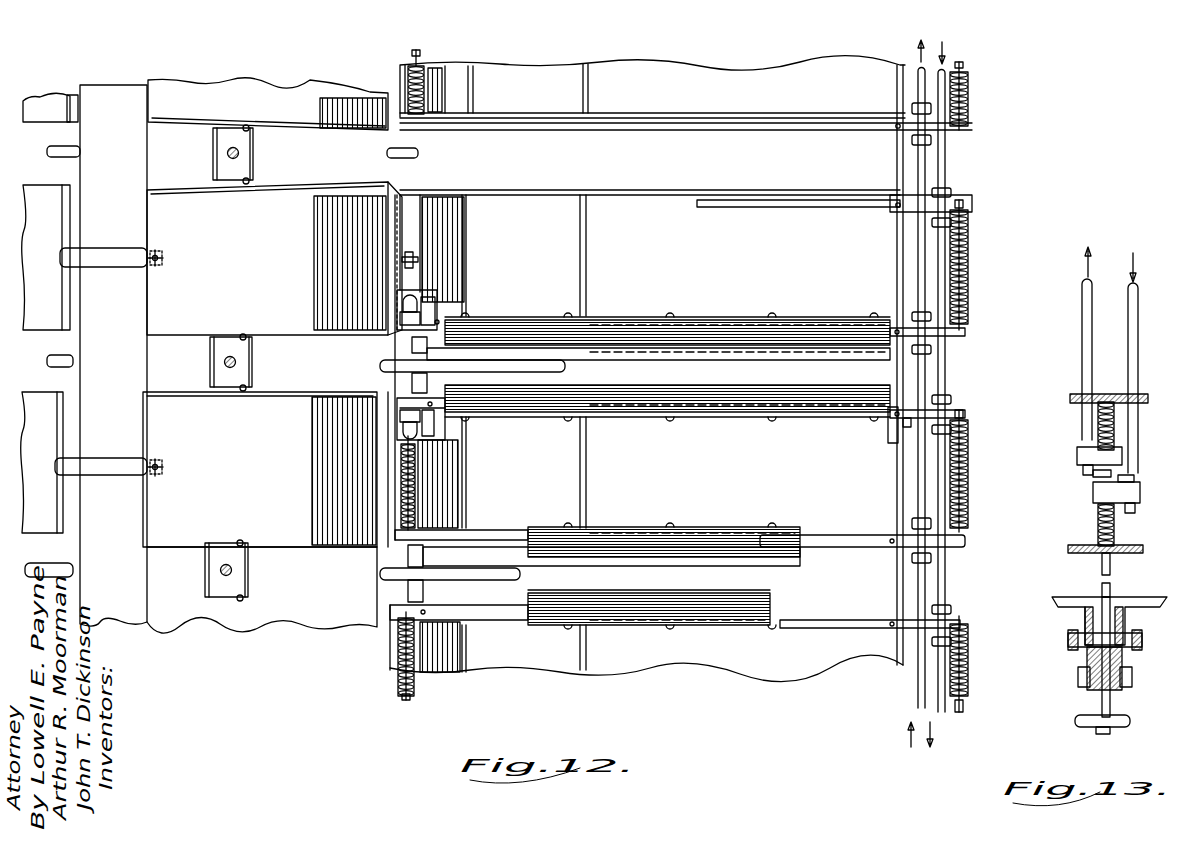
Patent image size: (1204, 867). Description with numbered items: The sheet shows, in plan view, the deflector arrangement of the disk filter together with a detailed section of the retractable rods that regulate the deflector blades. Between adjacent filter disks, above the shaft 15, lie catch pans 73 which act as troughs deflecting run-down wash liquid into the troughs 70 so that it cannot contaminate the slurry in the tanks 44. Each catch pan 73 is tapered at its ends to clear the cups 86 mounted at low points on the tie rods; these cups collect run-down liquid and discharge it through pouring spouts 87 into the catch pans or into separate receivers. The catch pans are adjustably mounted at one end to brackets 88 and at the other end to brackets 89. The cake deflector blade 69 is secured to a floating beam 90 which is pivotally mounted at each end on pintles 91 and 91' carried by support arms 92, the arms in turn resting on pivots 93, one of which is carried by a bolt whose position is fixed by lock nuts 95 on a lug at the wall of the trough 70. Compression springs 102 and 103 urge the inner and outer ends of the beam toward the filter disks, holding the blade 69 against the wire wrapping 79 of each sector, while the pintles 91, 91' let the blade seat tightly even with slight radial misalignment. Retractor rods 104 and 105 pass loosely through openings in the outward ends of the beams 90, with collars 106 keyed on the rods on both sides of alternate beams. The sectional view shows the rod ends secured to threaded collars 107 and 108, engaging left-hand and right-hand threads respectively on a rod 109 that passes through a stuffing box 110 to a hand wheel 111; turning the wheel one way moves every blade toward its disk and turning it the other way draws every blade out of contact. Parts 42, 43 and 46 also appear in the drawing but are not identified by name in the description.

In FIG. 12, the shaft 15 is at (80, 205).
In FIG. 12, the cross bar 42 is at (827, 612).
In FIG. 12, the pivot shaft 43 is at (63, 146).
In FIG. 12, the tanks 44 is at (47, 190).
In FIG. 12, the support box 46 is at (63, 428).
In FIG. 12, the deflector blade 69 is at (560, 322).
In FIG. 12, the trough 70 is at (548, 205).
In FIG. 12, the catch pan 73 is at (148, 105).
In FIG. 12, the wire wrapping 79 is at (655, 350).
In FIG. 12, the cup 86 is at (213, 155).
In FIG. 12, the pouring spout 87 is at (248, 126).
In FIG. 12, the bracket 88 is at (107, 257).
In FIG. 12, the bracket 89 is at (405, 250).
In FIG. 12, the floating beam 90 is at (850, 423).
In FIG. 12, the pintle 91 is at (456, 369).
In FIG. 12, the pintle 91' is at (883, 434).
In FIG. 12, the support arm 92 is at (432, 298).
In FIG. 12, the pivot 93 is at (440, 318).
In FIG. 12, the lock nuts 95 is at (422, 298).
In FIG. 12, the compression spring 102 is at (422, 62).
In FIG. 12, the compression spring 103 is at (968, 93).
In FIG. 12, the retractor rod 104 is at (925, 372).
In FIG. 13, the retractor rod 104 is at (1083, 338).
In FIG. 12, the retractor rod 105 is at (946, 385).
In FIG. 13, the retractor rod 105 is at (1138, 338).
In FIG. 12, the collar 106 is at (947, 222).
In FIG. 13, the threaded collar 107 is at (1080, 453).
In FIG. 13, the threaded collar 108 is at (1140, 492).
In FIG. 13, the rod 109 is at (1100, 522).
In FIG. 13, the stuffing box 110 is at (1127, 677).
In FIG. 13, the hand wheel 111 is at (1110, 727).